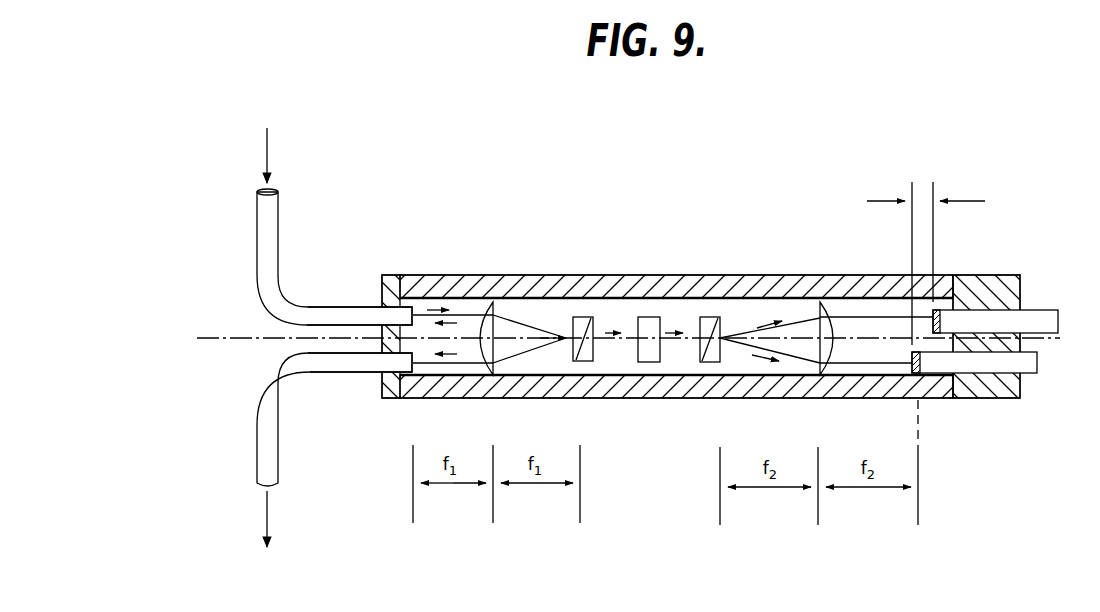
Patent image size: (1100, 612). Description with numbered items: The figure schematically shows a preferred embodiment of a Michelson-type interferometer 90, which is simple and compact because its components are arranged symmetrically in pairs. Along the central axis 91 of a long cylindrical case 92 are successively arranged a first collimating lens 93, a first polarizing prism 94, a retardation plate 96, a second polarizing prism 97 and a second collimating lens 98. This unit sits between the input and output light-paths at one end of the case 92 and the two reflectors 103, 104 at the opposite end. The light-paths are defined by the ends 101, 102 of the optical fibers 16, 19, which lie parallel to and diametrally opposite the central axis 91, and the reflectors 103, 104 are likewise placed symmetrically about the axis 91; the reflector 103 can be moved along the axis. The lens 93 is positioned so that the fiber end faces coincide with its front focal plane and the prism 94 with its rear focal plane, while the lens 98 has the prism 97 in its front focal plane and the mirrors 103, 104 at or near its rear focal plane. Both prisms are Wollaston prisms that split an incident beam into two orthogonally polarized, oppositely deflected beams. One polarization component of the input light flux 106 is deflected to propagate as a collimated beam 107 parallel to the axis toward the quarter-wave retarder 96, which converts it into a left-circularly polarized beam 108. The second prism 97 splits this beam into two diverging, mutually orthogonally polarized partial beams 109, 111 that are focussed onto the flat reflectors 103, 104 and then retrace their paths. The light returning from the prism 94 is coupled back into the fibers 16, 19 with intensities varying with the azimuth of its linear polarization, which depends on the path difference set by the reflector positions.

The Michelson-type interferometer 90 is at (597, 210).
The central axis 91 is at (212, 334).
The cylindrical case 92 is at (743, 285).
The first collimating lens 93 is at (490, 327).
The first polarizing prism 94 is at (582, 318).
The retardation plate 96 is at (650, 352).
The second polarizing prism 97 is at (710, 353).
The second collimating lens 98 is at (827, 327).
The optical fiber 16 is at (258, 257).
The optical fiber 19 is at (260, 443).
The end of optical fiber 101 is at (323, 315).
The end of optical fiber 102 is at (322, 360).
The reflector 103 is at (930, 318).
The reflector 104 is at (908, 370).
The input light-flux 106 is at (438, 308).
The collimated partial light-beam 107 is at (613, 330).
The left-circularly polarized beam 108 is at (680, 330).
The partial light beam 109 is at (770, 323).
The partial light beam 111 is at (763, 357).